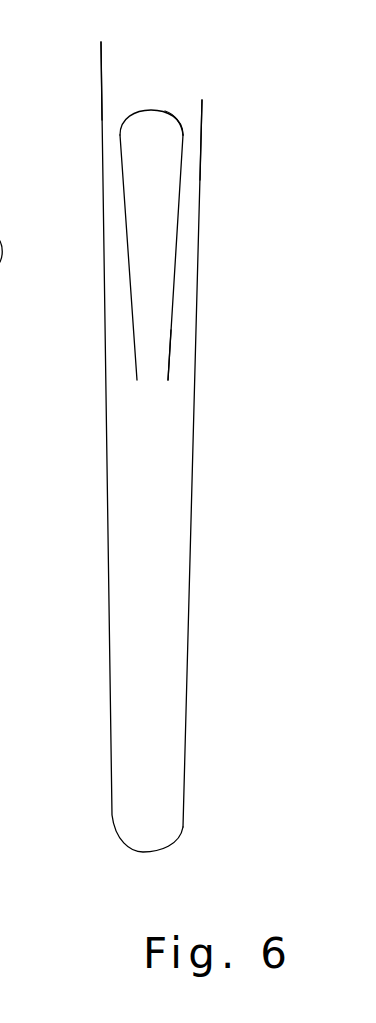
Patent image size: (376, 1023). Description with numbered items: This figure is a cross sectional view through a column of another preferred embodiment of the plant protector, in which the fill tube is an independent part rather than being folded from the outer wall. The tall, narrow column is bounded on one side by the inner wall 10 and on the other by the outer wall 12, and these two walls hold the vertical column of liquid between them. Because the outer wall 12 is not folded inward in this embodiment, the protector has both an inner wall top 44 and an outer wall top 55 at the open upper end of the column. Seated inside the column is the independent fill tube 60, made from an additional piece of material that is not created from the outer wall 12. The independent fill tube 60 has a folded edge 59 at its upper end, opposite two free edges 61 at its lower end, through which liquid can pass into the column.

The inner wall 10 is at (101, 191).
The outer wall 12 is at (202, 187).
The inner wall top 44 is at (100, 42).
The outer wall top 55 is at (202, 100).
The independent fill tube 60 is at (152, 110).
The folded edge 59 is at (180, 118).
The free edges 61 is at (168, 380).